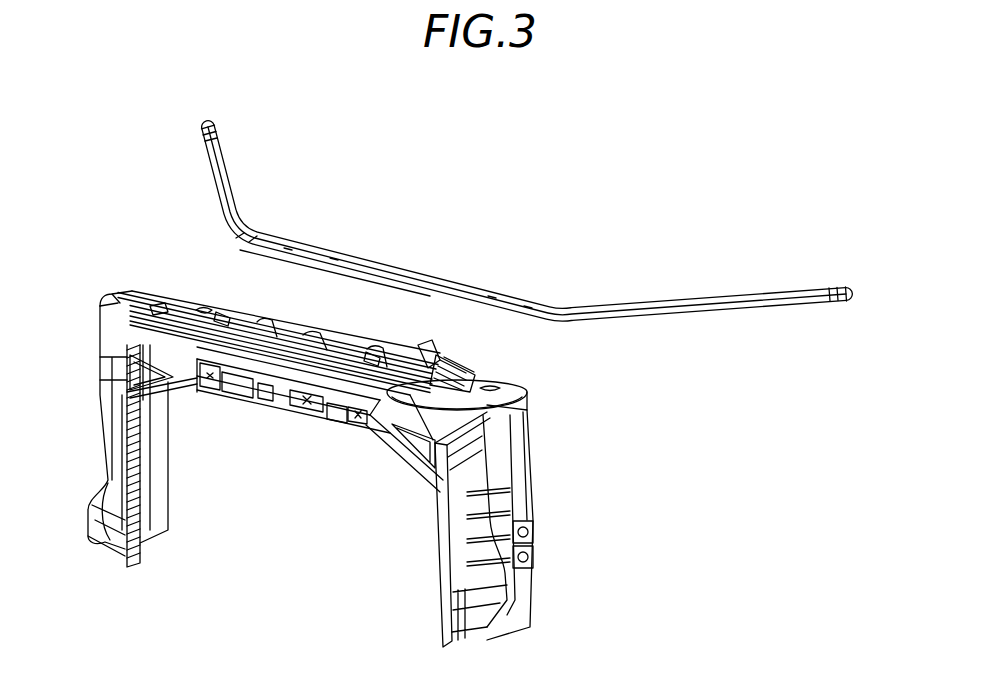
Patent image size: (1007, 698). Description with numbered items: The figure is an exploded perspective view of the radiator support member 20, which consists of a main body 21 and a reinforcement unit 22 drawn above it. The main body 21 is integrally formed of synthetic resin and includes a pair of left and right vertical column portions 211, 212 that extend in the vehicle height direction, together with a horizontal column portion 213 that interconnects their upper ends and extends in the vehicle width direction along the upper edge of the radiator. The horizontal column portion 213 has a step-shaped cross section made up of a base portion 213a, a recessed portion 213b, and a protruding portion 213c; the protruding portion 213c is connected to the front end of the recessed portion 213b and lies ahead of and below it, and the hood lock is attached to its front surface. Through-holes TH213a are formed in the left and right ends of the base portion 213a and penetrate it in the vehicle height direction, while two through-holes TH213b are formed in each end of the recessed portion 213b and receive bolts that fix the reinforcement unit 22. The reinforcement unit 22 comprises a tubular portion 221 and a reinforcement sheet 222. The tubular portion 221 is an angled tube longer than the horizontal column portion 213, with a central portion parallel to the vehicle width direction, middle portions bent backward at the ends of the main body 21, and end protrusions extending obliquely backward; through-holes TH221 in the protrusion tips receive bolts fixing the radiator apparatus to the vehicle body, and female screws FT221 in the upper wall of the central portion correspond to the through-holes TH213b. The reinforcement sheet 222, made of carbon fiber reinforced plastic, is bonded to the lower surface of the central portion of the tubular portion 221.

The radiator support member 20 is at (493, 192).
The main body 21 is at (540, 414).
The reinforcement unit 22 is at (662, 293).
The vertical column portion 211 is at (522, 587).
The vertical column portion 212 is at (108, 462).
The horizontal column portion 213 is at (470, 383).
The base portion 213a is at (428, 373).
The recessed portion 213b is at (522, 402).
The protruding portion 213c is at (307, 413).
The tubular portion 221 is at (423, 277).
The reinforcement sheet 222 is at (457, 313).
The through-hole TH221 is at (841, 288).
The female screw FT221 is at (550, 244).
The through-hole TH213a is at (537, 380).
The through-hole TH213b is at (427, 368).